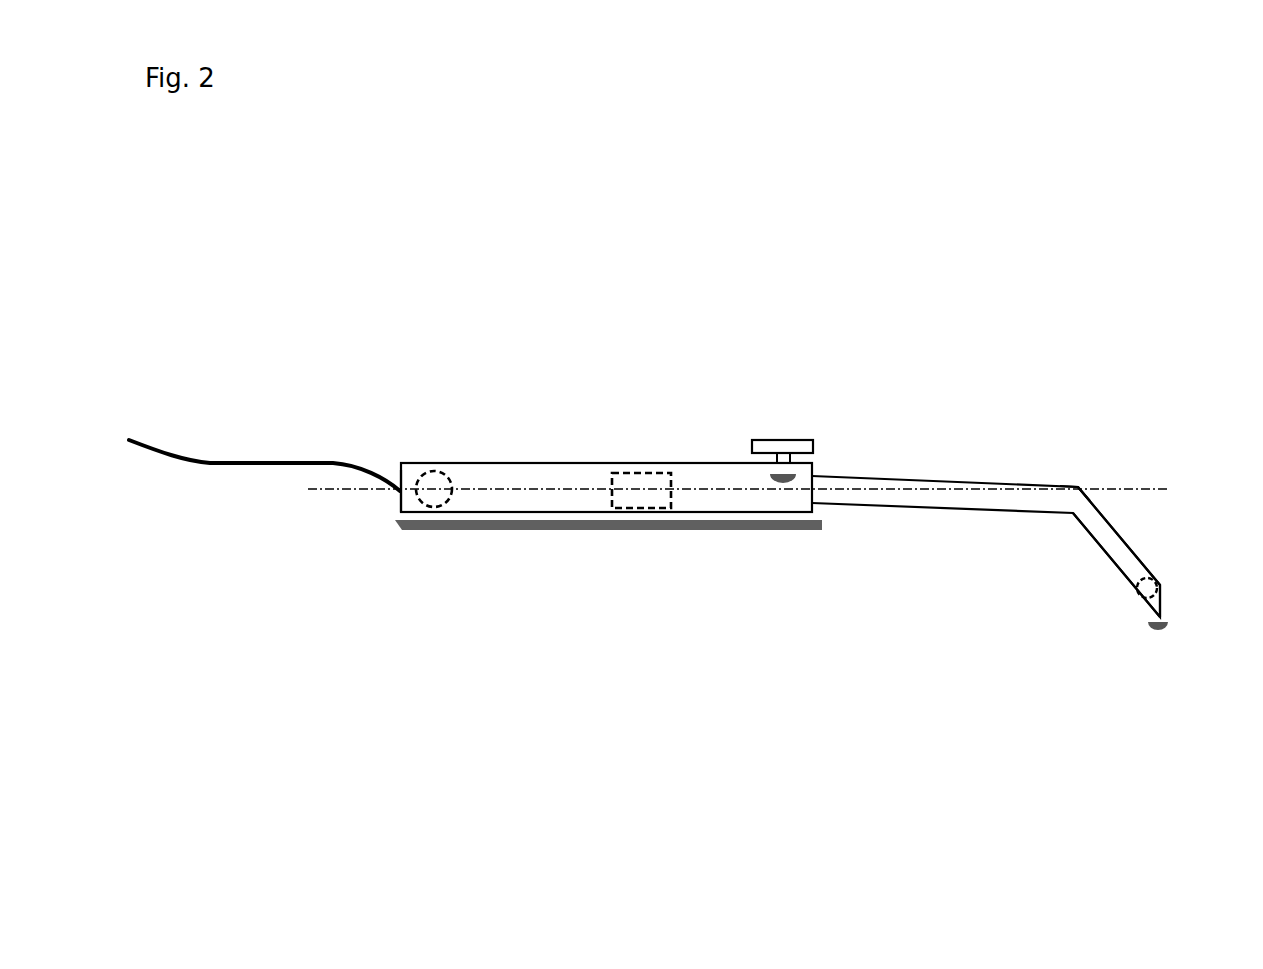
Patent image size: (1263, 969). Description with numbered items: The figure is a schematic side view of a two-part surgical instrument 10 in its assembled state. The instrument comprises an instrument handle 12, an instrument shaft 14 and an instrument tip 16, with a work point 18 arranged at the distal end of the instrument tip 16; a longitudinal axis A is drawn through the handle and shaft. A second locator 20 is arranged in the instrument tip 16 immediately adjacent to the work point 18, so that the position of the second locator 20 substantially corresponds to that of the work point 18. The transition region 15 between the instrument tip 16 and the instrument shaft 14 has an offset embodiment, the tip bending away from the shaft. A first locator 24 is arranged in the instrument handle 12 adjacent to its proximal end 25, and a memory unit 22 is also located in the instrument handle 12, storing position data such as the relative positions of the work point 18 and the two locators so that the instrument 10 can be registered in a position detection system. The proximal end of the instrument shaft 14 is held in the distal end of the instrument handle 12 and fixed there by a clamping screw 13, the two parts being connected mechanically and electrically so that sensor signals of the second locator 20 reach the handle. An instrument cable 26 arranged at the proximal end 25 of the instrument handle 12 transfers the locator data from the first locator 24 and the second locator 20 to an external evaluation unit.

The surgical instrument 10 is at (483, 297).
The longitudinal axis A is at (492, 489).
The instrument handle 12 is at (577, 393).
The clamping screw 13 is at (783, 453).
The instrument shaft 14 is at (907, 452).
The transition region 15 is at (1086, 460).
The instrument tip 16 is at (1145, 532).
The work point 18 is at (1148, 623).
The second locator 20 is at (1145, 593).
The memory unit 22 is at (636, 497).
The first locator 24 is at (437, 491).
The proximal end 25 is at (398, 517).
The instrument cable 26 is at (330, 466).